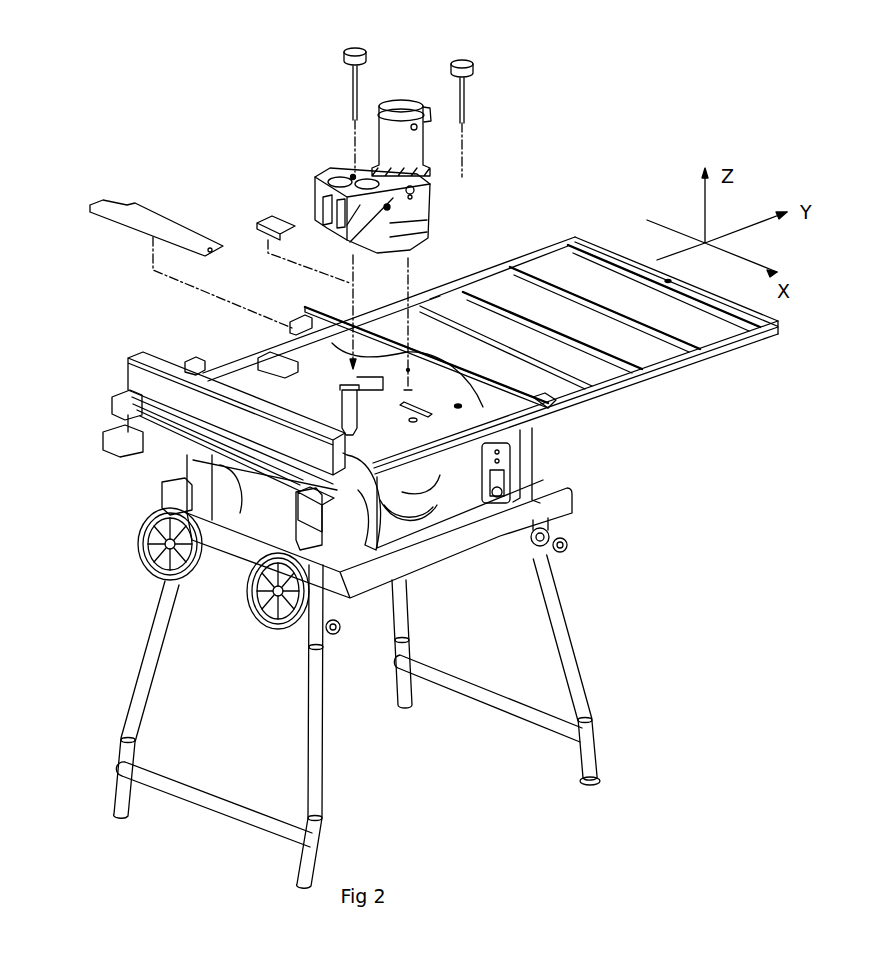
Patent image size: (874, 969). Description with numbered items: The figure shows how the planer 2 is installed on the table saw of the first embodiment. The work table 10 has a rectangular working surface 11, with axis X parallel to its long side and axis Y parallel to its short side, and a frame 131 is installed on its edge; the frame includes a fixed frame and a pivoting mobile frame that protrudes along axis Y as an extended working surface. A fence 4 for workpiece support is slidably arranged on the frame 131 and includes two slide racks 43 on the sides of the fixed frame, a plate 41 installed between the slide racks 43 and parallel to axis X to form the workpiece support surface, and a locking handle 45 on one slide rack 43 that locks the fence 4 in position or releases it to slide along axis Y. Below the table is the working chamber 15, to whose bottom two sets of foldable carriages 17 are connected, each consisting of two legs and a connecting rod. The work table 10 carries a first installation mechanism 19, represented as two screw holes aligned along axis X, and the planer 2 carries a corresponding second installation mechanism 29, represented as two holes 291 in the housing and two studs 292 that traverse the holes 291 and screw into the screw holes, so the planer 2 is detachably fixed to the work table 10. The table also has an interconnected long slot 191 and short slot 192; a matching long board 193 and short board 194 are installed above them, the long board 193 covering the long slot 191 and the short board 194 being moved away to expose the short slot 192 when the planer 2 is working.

The planer 2 is at (343, 140).
The fence 4 is at (120, 353).
The work table 10 is at (500, 337).
The working surface 11 is at (530, 425).
The working chamber 15 is at (527, 478).
The foldable carriage 17 is at (347, 757).
The first installation mechanism 19 is at (553, 412).
The second installation mechanism 29 is at (475, 99).
The plate 41 is at (150, 362).
The slide rack 43 is at (178, 504).
The locking handle 45 is at (382, 553).
The frame 131 is at (709, 381).
The long slot 191 is at (277, 367).
The short slot 192 is at (348, 368).
The long board 193 is at (127, 214).
The short board 194 is at (267, 220).
The hole 291 is at (412, 197).
The stud 292 is at (466, 65).